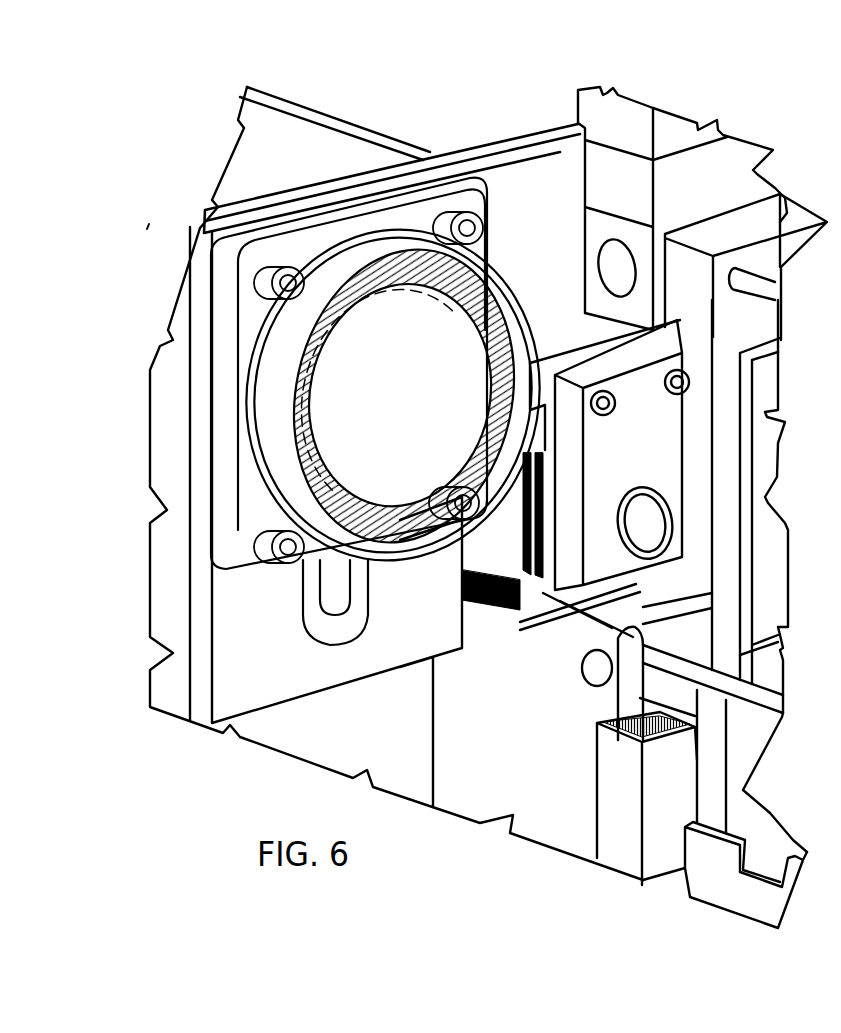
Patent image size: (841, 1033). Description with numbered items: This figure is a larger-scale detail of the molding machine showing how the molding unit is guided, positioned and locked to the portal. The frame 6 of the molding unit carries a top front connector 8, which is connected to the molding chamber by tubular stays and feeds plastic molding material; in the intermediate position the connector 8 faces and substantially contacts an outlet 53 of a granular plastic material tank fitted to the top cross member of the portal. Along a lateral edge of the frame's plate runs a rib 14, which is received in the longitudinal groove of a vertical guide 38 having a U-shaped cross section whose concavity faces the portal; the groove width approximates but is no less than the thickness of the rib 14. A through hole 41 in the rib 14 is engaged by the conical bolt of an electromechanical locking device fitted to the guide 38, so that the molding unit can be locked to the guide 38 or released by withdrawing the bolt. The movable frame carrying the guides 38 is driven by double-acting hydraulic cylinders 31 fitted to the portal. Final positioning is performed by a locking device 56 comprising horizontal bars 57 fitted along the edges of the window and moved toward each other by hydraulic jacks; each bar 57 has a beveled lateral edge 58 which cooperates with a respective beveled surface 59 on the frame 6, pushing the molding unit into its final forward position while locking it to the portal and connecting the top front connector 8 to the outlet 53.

The frame 6 is at (520, 847).
The top front connector 8 is at (780, 227).
The rib 14 is at (550, 815).
The double-acting hydraulic cylinder 31 is at (392, 240).
The vertical guide 38 is at (622, 842).
The through hole 41 is at (593, 690).
The outlet 53 is at (585, 228).
The locking device 56 is at (598, 608).
The horizontal bar 57 is at (632, 580).
The beveled lateral edge 58 is at (503, 610).
The beveled surface 59 is at (547, 603).